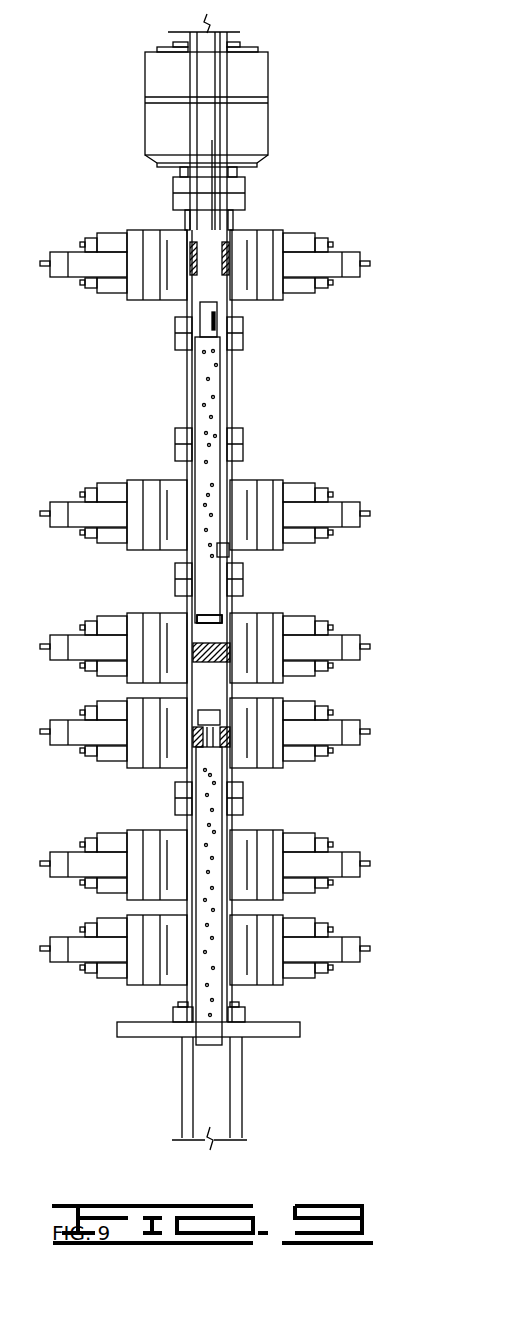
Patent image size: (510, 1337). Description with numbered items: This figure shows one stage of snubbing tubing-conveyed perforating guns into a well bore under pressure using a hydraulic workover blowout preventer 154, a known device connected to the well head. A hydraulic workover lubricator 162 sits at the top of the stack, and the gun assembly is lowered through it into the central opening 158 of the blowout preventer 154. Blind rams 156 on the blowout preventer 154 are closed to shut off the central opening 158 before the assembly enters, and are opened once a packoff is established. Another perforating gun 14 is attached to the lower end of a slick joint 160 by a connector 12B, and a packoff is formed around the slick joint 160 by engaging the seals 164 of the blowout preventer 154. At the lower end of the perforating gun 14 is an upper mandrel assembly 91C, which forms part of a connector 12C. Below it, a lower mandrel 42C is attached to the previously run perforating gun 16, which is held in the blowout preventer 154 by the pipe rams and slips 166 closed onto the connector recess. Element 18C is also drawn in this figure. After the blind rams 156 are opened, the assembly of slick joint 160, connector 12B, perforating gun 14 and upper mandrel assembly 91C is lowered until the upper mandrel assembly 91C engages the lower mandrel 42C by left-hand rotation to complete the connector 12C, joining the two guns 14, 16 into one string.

The hydraulic workover lubricator 162 is at (252, 75).
The slick joint 160 is at (218, 197).
The seals 164 is at (227, 253).
The connector 12B is at (213, 322).
The perforating gun 14 is at (212, 392).
The hydraulic workover blowout preventer 154 is at (283, 477).
The central opening 158 is at (217, 555).
The plug 18C is at (215, 613).
The upper mandrel assembly 91C is at (215, 613).
The connector 12C is at (215, 613).
The blind rams 156 is at (230, 650).
The lower mandrel 42C is at (217, 717).
The pipe rams and slips 166 is at (228, 740).
The perforating gun 16 is at (208, 847).